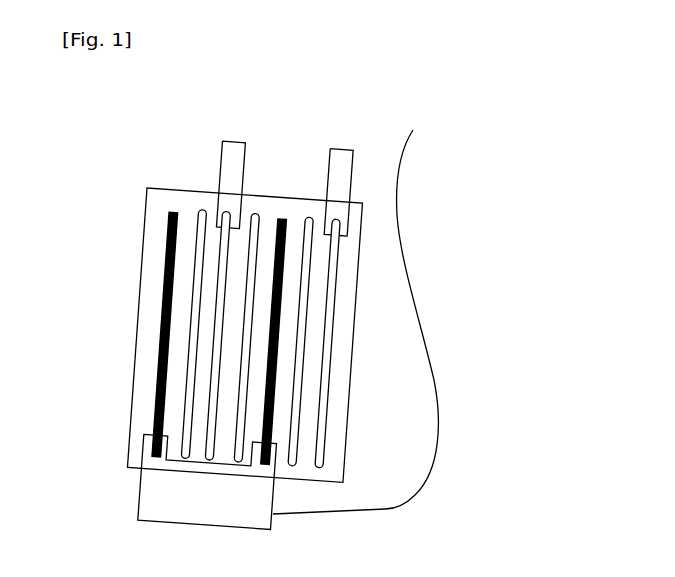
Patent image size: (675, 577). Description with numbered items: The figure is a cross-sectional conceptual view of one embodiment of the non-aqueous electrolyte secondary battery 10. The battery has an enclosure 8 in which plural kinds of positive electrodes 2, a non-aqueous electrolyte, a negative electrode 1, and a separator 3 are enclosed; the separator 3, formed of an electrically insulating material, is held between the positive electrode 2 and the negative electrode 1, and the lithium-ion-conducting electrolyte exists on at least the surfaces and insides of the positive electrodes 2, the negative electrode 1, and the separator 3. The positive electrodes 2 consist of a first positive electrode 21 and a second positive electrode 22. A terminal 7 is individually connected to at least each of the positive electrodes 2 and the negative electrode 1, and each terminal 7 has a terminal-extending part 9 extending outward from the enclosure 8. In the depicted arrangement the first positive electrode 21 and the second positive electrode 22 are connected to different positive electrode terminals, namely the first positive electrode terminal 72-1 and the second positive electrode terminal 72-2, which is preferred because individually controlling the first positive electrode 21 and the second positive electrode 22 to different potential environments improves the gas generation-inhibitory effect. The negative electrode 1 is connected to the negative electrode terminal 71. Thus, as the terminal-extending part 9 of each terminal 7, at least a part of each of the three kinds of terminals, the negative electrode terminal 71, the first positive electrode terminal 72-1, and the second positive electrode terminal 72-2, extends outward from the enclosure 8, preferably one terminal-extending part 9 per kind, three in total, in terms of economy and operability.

The negative electrode 1 is at (275, 297).
The positive electrode 2 is at (310, 315).
The separator 3 is at (303, 322).
The terminal 7 is at (244, 160).
The enclosure 8 is at (345, 457).
The terminal-extending part 9 is at (260, 305).
The non-aqueous electrolyte secondary battery 10 is at (190, 185).
The first positive electrode 21 is at (337, 270).
The second positive electrode 22 is at (226, 272).
The negative electrode terminal 71 is at (207, 481).
The first positive electrode terminal 72-1 is at (331, 167).
The second positive electrode terminal 72-2 is at (221, 167).